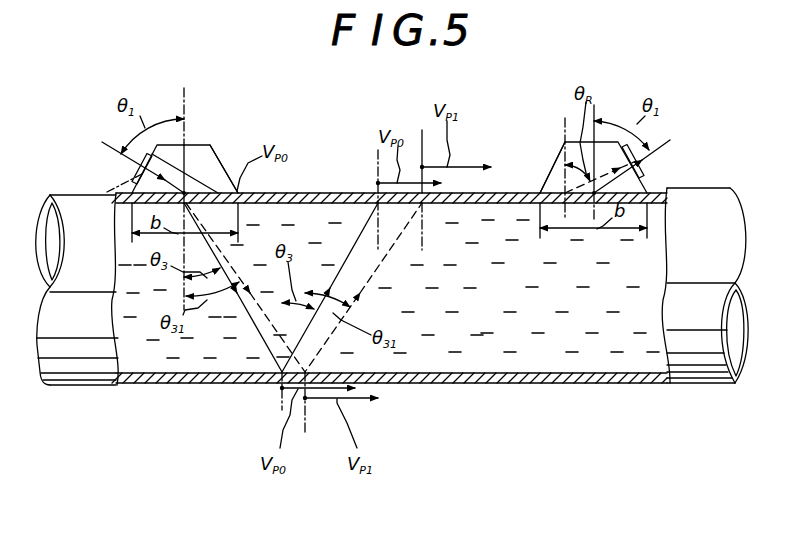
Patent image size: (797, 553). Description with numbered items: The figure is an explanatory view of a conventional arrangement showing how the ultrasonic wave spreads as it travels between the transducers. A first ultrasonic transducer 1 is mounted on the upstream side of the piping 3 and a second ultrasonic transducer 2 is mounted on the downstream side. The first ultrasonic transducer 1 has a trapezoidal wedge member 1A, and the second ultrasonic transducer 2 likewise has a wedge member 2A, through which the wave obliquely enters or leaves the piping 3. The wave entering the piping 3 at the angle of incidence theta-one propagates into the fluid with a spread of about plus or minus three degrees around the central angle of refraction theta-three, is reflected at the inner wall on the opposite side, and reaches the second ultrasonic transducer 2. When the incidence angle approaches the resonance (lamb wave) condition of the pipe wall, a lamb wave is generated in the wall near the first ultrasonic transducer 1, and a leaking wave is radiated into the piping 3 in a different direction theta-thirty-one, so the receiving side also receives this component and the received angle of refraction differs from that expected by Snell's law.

The first ultrasonic transducer 1 is at (204, 165).
The wedge member 1A is at (214, 155).
The second ultrasonic transducer 2 is at (570, 155).
The wedge member of second ultrasonic transducer 2A is at (562, 150).
The piping 3 is at (508, 383).